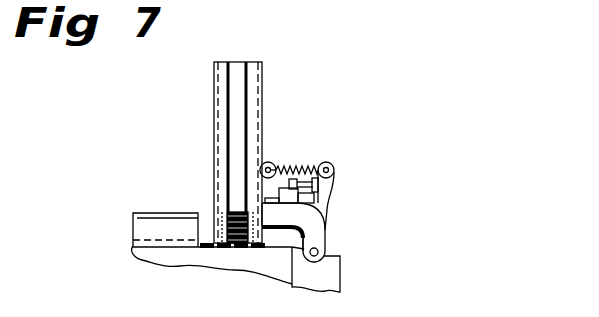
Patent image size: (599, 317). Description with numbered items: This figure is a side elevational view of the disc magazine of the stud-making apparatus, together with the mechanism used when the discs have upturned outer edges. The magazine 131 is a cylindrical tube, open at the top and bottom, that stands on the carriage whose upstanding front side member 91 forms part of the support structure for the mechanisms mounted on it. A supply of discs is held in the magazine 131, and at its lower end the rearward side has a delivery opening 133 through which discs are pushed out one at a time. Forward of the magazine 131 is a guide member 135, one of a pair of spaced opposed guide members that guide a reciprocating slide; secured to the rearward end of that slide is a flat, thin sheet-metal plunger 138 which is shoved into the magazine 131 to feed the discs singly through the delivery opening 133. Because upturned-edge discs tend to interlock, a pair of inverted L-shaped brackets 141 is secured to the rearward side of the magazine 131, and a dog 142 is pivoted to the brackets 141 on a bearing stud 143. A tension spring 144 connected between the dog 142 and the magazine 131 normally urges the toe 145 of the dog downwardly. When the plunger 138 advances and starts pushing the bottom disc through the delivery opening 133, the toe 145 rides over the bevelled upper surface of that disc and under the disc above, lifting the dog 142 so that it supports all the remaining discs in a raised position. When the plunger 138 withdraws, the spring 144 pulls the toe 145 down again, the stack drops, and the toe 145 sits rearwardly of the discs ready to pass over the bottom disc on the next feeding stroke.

The front side member 91 is at (215, 262).
The magazine 131 is at (218, 125).
The delivery opening 133 is at (268, 248).
The guide member 135 is at (162, 228).
The plunger 138 is at (271, 249).
The inverted L-shaped bracket 141 is at (317, 234).
The dog 142 is at (320, 206).
The bearing stud 143 is at (322, 256).
The tension spring 144 is at (297, 168).
The toe 145 is at (263, 237).